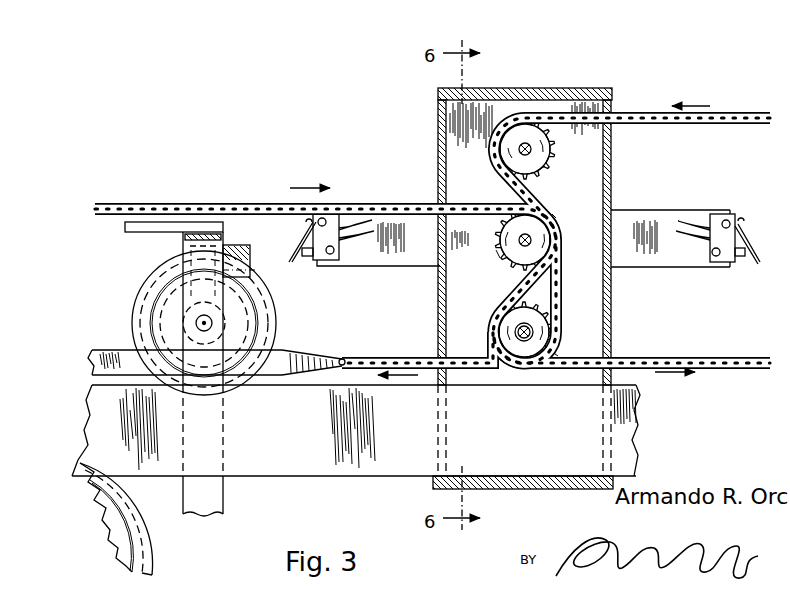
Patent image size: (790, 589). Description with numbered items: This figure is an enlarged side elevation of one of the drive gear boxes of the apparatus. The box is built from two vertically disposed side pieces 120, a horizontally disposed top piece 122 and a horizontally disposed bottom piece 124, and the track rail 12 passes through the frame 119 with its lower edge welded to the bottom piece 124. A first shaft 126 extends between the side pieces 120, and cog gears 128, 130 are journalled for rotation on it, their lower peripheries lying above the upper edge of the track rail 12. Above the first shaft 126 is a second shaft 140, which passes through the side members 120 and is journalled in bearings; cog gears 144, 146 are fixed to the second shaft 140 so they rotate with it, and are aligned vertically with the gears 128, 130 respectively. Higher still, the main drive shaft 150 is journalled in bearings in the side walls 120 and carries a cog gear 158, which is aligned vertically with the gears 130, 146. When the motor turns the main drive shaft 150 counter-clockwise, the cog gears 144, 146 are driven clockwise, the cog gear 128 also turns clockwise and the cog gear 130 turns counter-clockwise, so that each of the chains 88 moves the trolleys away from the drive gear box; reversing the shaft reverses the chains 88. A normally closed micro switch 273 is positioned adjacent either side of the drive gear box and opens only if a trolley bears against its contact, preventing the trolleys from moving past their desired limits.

The track rail 12 is at (282, 464).
The chains 88 is at (197, 201).
The frame 119 is at (611, 193).
The side pieces 120 is at (582, 152).
The top piece 122 is at (540, 92).
The bottom piece 124 is at (549, 485).
The first shaft 126 is at (531, 327).
The cog gear 128 is at (498, 331).
The cog gear 130 is at (560, 357).
The second shaft 140 is at (532, 240).
The cog gear 144 is at (500, 259).
The cog gear 146 is at (553, 215).
The main drive shaft 150 is at (518, 153).
The cog gear 158 is at (543, 173).
The switch 273 is at (339, 254).